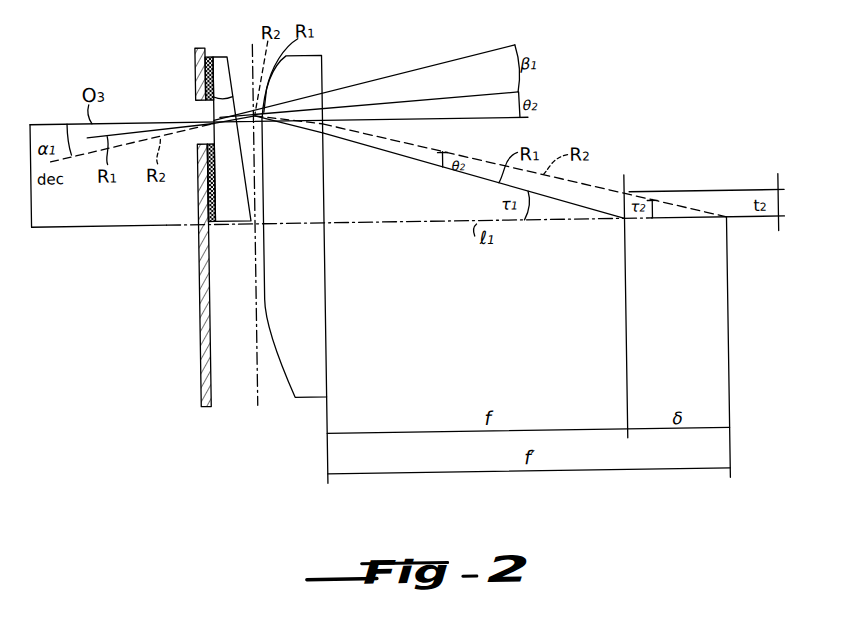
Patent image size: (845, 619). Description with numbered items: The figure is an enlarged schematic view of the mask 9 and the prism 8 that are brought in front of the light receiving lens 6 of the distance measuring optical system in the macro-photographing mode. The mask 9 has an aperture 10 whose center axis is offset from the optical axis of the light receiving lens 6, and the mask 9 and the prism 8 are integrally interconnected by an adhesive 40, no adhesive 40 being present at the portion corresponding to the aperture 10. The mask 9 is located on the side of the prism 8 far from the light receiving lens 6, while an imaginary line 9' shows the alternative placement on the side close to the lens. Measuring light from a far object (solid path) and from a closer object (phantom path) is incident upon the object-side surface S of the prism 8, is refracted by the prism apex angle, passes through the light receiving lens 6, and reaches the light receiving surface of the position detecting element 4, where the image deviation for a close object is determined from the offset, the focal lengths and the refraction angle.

The light receiving lens 6 is at (322, 69).
The prism 8 is at (229, 57).
The mask 9 is at (191, 287).
The imaginary line 9' is at (244, 236).
The aperture 10 is at (200, 110).
The adhesive 40 is at (210, 222).
The surface of the prism S is at (207, 190).
The position detecting element 4 is at (623, 251).